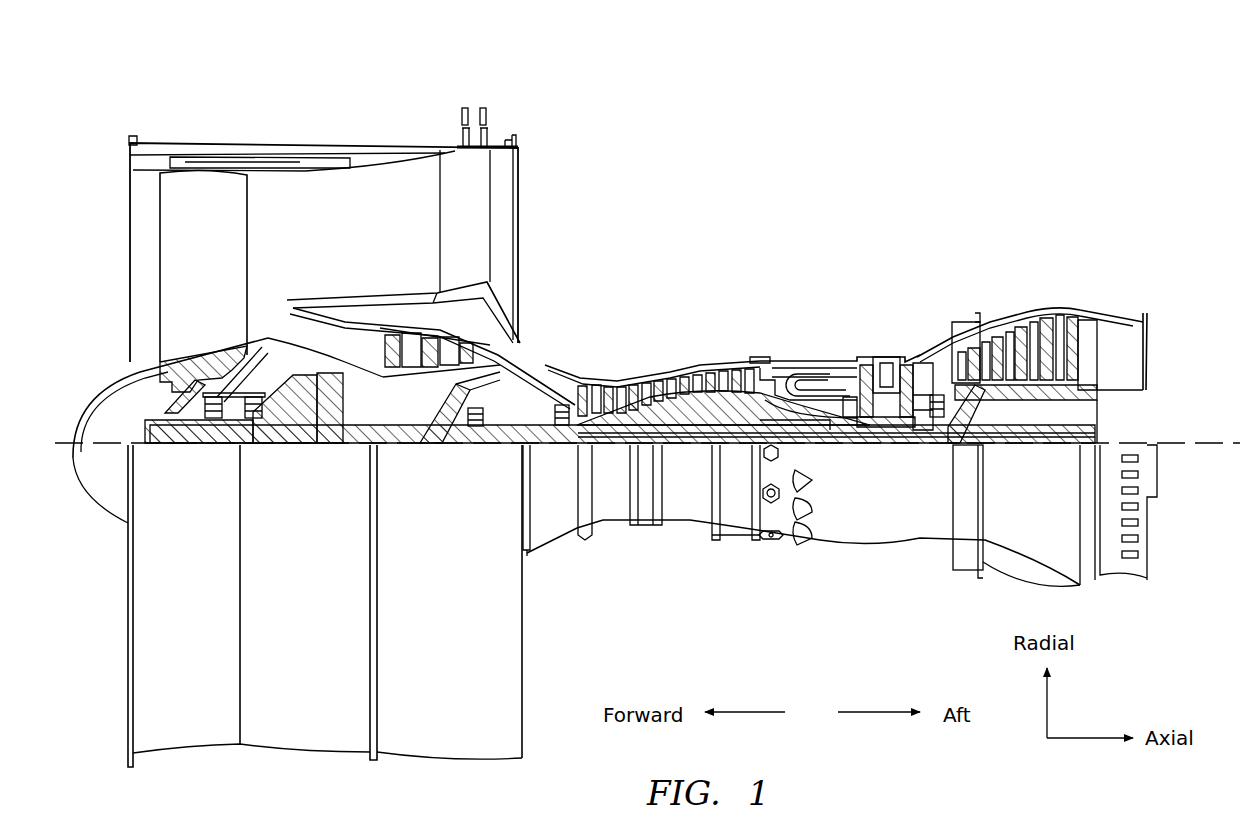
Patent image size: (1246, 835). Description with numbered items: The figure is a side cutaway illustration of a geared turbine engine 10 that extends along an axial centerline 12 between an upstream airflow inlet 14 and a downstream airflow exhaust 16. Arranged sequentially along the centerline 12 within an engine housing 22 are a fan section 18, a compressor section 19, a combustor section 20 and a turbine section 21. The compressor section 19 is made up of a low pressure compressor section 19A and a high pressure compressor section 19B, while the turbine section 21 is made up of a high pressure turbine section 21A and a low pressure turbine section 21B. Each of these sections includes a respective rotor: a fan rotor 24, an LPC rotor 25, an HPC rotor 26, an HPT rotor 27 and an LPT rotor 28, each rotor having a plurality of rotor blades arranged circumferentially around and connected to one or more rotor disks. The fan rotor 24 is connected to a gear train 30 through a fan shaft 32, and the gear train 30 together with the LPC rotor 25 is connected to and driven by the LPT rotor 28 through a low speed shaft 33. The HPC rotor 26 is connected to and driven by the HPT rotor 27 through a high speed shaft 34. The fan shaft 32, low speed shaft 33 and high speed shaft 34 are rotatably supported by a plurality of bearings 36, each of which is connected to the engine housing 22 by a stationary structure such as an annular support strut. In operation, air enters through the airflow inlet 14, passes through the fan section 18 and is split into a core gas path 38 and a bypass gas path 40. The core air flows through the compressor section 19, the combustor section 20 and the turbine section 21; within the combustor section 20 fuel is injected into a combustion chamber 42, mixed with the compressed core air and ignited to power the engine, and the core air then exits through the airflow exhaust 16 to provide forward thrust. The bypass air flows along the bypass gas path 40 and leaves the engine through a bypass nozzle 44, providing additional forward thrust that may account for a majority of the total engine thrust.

The geared turbine engine 10 is at (98, 126).
The axial centerline 12 is at (1202, 453).
The upstream airflow inlet 14 is at (129, 213).
The downstream airflow exhaust 16 is at (1147, 352).
The fan section 18 is at (292, 125).
The compressor section 19 is at (737, 65).
The low pressure compressor section 19A is at (522, 112).
The high pressure compressor section 19B is at (735, 298).
The combustor section 20 is at (853, 298).
The turbine section 21 is at (1107, 225).
The high pressure turbine section 21A is at (933, 298).
The low pressure turbine section 21B is at (1107, 298).
The engine housing 22 is at (544, 554).
The fan rotor 24 is at (152, 377).
The LPC rotor 25 is at (433, 388).
The HPC rotor 26 is at (685, 412).
The HPT rotor 27 is at (887, 437).
The LPT rotor 28 is at (1023, 393).
The gear train 30 is at (330, 448).
The fan shaft 32 is at (193, 450).
The low speed shaft 33 is at (733, 448).
The high speed shaft 34 is at (825, 448).
The bearings 36 is at (250, 440).
The core gas path 38 is at (540, 375).
The bypass gas path 40 is at (378, 232).
The combustion chamber 42 is at (813, 387).
The bypass nozzle 44 is at (519, 197).